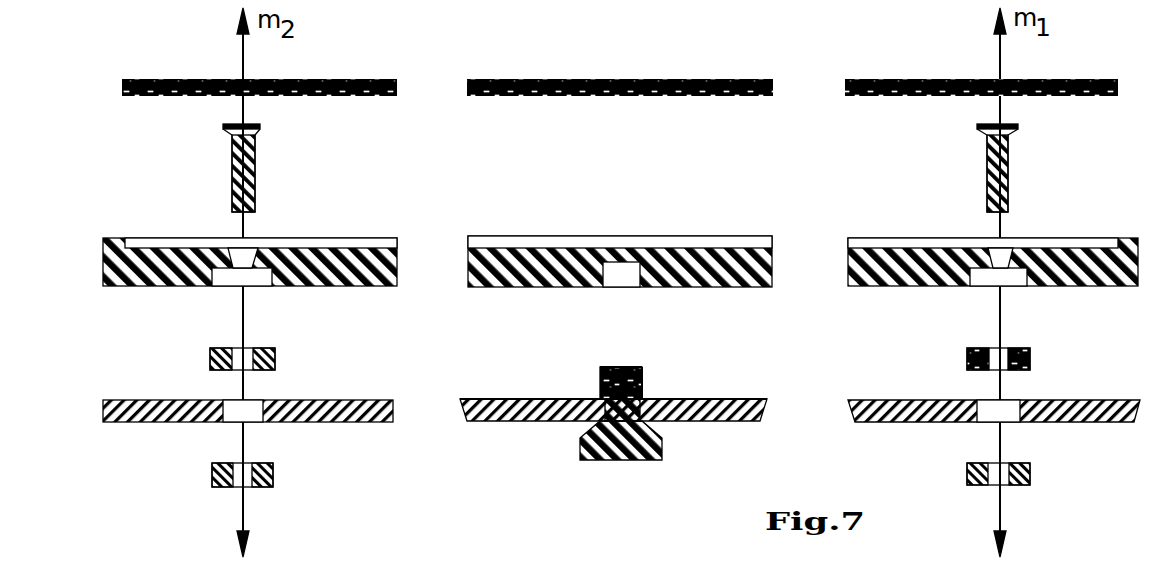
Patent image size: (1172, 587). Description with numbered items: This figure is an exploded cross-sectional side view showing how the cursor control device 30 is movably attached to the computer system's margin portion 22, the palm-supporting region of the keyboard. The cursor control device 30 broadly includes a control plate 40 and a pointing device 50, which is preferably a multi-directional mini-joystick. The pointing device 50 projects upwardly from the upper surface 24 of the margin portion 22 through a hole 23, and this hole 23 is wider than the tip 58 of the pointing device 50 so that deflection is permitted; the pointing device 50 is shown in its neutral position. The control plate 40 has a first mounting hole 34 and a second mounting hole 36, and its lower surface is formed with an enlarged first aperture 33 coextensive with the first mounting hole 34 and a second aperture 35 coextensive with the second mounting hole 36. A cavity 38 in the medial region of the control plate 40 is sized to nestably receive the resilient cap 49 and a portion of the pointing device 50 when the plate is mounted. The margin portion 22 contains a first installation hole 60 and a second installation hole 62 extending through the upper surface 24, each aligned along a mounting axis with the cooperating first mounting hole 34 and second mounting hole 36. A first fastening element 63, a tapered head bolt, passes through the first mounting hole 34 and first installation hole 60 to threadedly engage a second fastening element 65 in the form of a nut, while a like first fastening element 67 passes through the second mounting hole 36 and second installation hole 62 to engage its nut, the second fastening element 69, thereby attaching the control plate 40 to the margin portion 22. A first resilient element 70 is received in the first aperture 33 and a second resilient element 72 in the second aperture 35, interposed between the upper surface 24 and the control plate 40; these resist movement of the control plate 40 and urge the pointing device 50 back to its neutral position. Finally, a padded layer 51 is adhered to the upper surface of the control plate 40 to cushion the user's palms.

The margin portion 22 is at (497, 421).
The hole 23 is at (641, 385).
The upper surface 24 is at (493, 400).
The cursor control device 30 is at (553, 443).
The first aperture 33 is at (1016, 299).
The first mounting hole 34 is at (1000, 262).
The second aperture 35 is at (228, 296).
The second mounting hole 36 is at (240, 262).
The cavity 38 is at (628, 292).
The control plate 40 is at (690, 256).
The resilient cap 49 is at (623, 367).
The pointing device 50 is at (630, 437).
The padded layer 51 is at (540, 80).
The tip 58 is at (601, 386).
The first installation hole 60 is at (985, 429).
The second installation hole 62 is at (236, 414).
The first fastening element 63 is at (990, 172).
The second fastening element 65 is at (1030, 484).
The first fastening element 67 is at (248, 170).
The second fastening element 69 is at (275, 477).
The first resilient element 70 is at (965, 357).
The second resilient element 72 is at (277, 353).